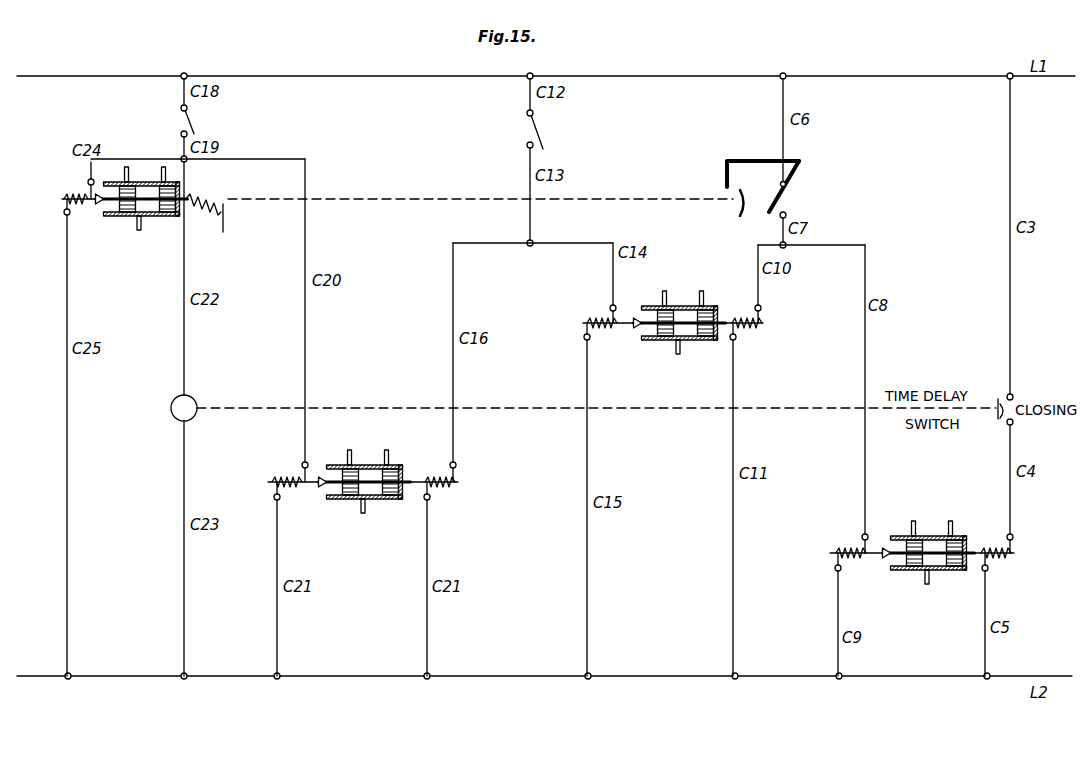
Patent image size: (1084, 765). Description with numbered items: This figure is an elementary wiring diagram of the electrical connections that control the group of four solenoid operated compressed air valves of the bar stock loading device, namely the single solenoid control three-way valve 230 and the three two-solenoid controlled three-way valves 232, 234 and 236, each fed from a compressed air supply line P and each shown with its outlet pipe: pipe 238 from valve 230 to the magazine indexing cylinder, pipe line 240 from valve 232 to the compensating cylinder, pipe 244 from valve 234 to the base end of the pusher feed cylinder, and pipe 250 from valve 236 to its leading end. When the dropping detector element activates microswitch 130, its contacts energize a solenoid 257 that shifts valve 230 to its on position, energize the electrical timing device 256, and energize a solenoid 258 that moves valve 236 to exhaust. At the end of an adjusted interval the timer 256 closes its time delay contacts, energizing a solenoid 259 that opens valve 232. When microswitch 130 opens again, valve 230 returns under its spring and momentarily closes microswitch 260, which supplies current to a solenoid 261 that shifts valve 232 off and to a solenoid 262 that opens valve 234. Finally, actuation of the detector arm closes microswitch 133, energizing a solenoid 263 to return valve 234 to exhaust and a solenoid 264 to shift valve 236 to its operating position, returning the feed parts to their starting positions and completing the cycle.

The microswitch 130 is at (180, 120).
The microswitch 133 is at (528, 127).
The single solenoid control three-way valve 230 is at (126, 218).
The two-solenoid controlled three-way valve 232 is at (945, 572).
The two-solenoid controlled three-way valve 234 is at (655, 342).
The two-solenoid controlled three-way valve 236 is at (385, 500).
The pipe 238 is at (143, 233).
The pipe line 240 is at (922, 582).
The pipe 244 is at (683, 350).
The pipe 250 is at (361, 508).
The electrical timing device 256 is at (177, 418).
The solenoid 257 is at (70, 197).
The solenoid 258 is at (283, 478).
The solenoid 259 is at (995, 562).
The microswitch 260 is at (763, 200).
The solenoid 261 is at (842, 549).
The solenoid 262 is at (748, 328).
The solenoid 263 is at (595, 319).
The solenoid 264 is at (438, 490).